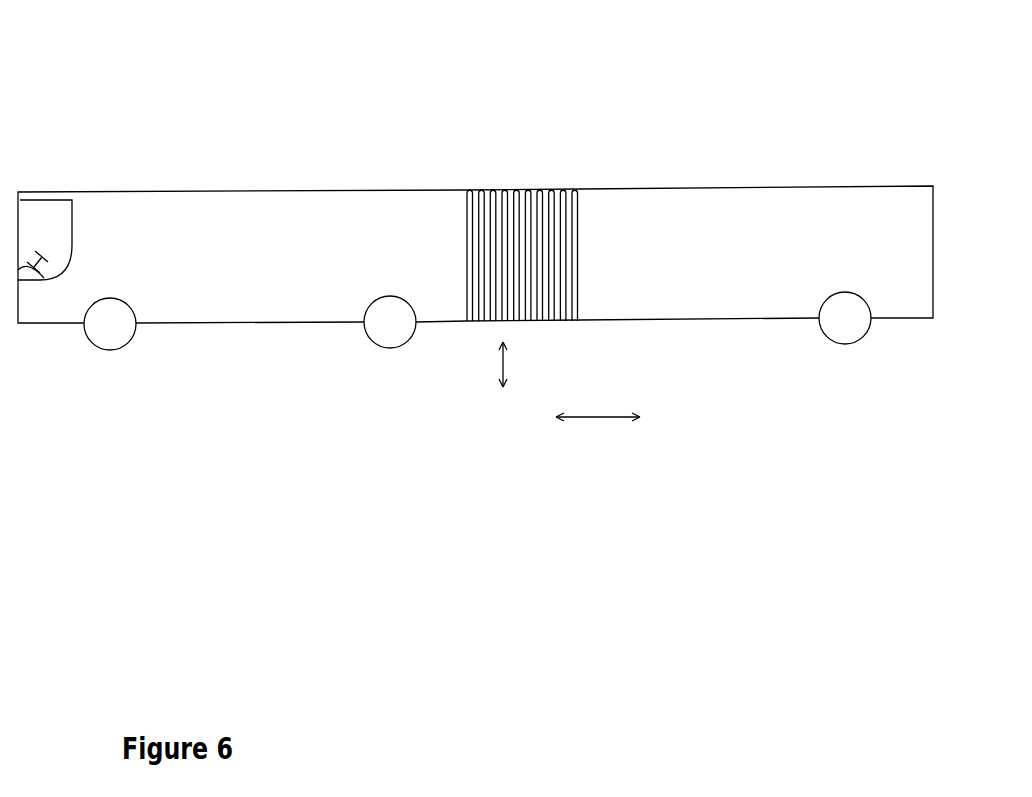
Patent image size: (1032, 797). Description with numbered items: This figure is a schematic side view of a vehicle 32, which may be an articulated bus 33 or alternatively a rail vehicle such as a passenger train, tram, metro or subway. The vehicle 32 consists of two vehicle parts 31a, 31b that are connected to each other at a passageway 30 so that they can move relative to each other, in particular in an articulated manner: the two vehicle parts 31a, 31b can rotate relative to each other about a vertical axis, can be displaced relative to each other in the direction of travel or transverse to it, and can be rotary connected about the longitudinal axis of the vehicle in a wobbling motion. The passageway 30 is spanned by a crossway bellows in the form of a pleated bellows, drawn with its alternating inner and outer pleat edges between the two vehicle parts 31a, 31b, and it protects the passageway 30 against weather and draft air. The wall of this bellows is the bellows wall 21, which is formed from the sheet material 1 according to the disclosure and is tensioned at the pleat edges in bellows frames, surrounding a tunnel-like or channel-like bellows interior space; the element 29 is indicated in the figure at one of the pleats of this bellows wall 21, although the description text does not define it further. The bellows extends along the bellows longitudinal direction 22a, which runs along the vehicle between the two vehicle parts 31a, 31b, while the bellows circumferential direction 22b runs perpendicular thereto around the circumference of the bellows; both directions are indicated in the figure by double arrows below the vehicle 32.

The vehicle 32 is at (475, 183).
The articulated bus 33 is at (475, 183).
The sheet material 1 is at (512, 186).
The bellows wall 21 is at (512, 186).
The bellows fold 29 is at (520, 230).
The passageway 30 is at (524, 143).
The vehicle part 31a is at (146, 208).
The vehicle part 31b is at (726, 208).
The bellows longitudinal direction 22a is at (598, 407).
The bellows circumferential direction 22b is at (520, 364).